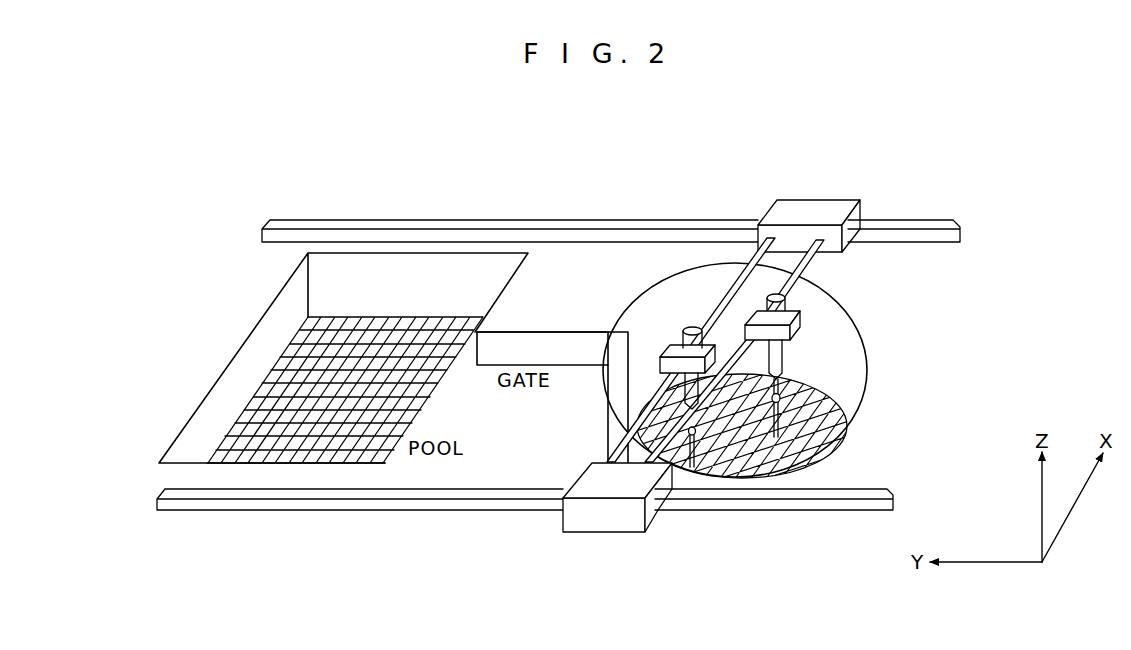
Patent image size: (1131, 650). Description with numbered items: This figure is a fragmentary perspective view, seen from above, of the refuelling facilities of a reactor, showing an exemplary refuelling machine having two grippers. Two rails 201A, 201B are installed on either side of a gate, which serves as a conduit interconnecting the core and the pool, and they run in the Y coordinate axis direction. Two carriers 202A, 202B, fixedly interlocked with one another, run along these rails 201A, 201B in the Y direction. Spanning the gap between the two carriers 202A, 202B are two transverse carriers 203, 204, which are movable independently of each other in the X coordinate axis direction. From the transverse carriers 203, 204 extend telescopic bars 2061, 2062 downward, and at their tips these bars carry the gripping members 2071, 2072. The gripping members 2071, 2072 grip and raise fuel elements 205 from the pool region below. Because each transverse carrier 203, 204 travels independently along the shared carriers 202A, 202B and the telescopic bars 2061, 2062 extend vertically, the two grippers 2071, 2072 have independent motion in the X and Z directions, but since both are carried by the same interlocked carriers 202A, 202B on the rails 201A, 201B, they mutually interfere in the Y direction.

The rail 201A is at (944, 225).
The rail 201B is at (858, 503).
The carrier 202A is at (829, 205).
The carrier 202B is at (618, 528).
The transverse carrier 203 is at (786, 300).
The transverse carrier 204 is at (678, 348).
The fuel element 205 is at (792, 425).
The telescopic bar 2061 is at (781, 349).
The telescopic bar 2062 is at (690, 401).
The gripping member 2071 is at (787, 397).
The gripping member 2072 is at (703, 435).